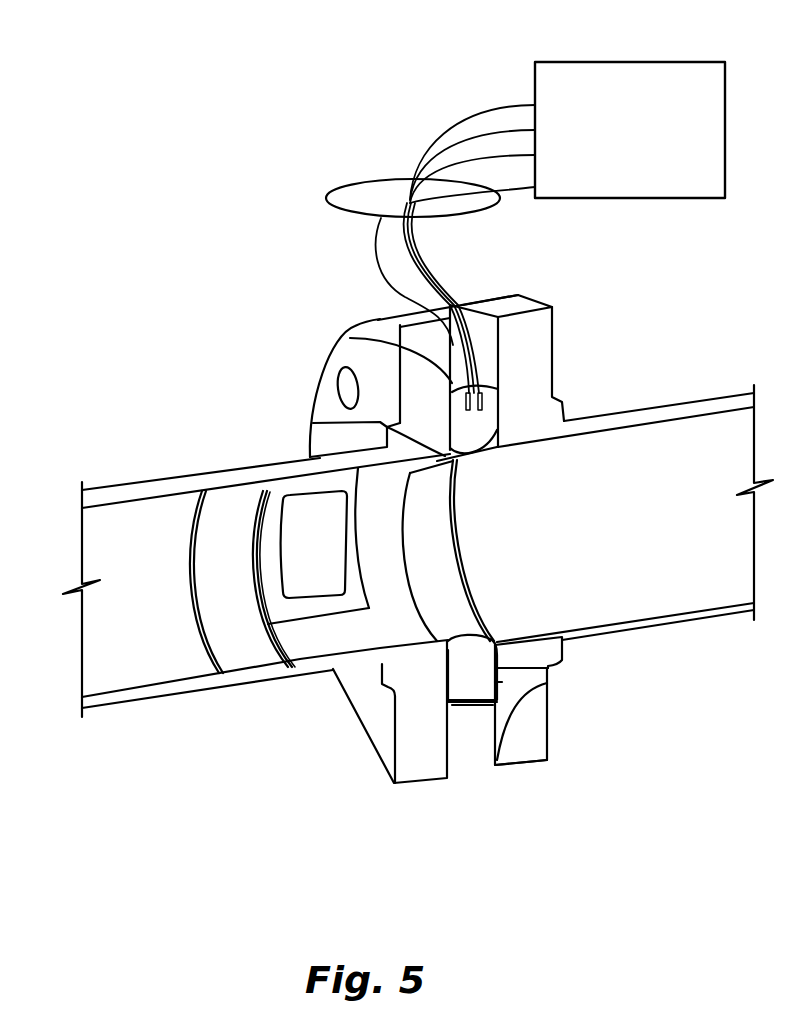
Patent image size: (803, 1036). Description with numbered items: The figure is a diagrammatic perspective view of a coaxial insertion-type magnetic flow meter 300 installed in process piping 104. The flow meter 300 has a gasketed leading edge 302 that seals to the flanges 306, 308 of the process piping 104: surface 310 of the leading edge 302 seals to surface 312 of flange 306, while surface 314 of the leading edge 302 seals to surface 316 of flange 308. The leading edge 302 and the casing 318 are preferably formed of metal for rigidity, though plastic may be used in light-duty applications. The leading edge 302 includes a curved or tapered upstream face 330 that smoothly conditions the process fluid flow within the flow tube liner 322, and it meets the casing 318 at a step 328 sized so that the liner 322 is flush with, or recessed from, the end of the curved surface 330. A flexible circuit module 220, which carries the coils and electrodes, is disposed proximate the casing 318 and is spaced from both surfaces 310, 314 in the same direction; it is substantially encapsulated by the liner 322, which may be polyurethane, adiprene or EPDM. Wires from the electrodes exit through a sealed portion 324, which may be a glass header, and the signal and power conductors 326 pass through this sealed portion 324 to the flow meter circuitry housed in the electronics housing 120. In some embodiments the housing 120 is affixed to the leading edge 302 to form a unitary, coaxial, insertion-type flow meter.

The process piping 104 is at (223, 688).
The electronics housing 120 is at (578, 62).
The flexible circuit module 220 is at (253, 521).
The flow meter 300 is at (147, 203).
The gasketed leading edge 302 is at (452, 705).
The flange 306 is at (353, 717).
The flange 308 is at (548, 685).
The surface 310 is at (447, 668).
The surface 312 is at (440, 767).
The surface 314 is at (502, 682).
The surface 316 is at (487, 750).
The casing 318 is at (282, 673).
The flow tube liner 322 is at (230, 650).
The sealed portion 324 is at (348, 338).
The signal and power conductors 326 is at (327, 200).
The step 328 is at (313, 423).
The curved upstream face 330 is at (548, 668).